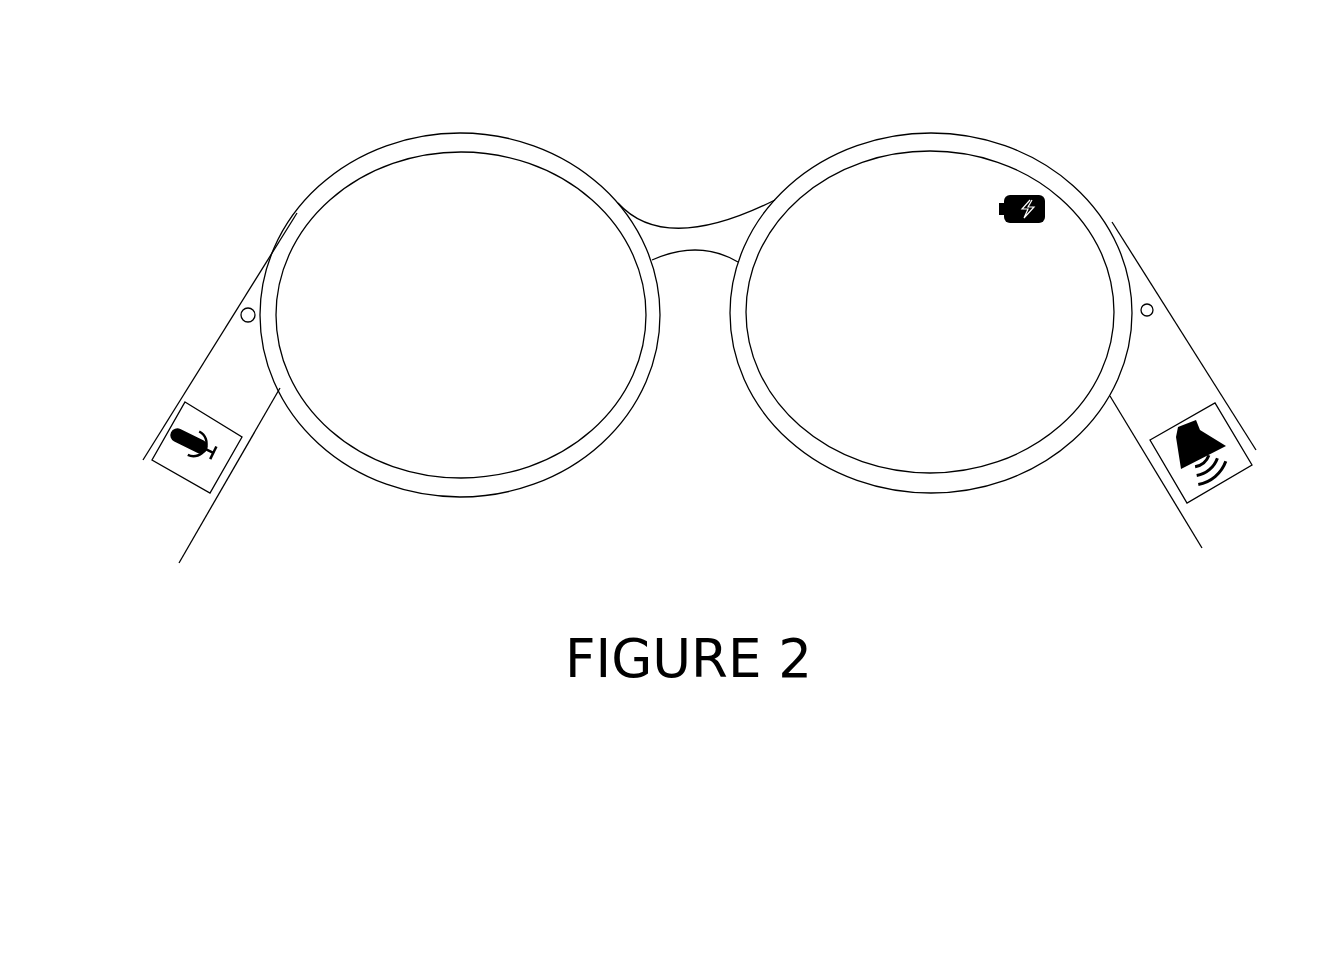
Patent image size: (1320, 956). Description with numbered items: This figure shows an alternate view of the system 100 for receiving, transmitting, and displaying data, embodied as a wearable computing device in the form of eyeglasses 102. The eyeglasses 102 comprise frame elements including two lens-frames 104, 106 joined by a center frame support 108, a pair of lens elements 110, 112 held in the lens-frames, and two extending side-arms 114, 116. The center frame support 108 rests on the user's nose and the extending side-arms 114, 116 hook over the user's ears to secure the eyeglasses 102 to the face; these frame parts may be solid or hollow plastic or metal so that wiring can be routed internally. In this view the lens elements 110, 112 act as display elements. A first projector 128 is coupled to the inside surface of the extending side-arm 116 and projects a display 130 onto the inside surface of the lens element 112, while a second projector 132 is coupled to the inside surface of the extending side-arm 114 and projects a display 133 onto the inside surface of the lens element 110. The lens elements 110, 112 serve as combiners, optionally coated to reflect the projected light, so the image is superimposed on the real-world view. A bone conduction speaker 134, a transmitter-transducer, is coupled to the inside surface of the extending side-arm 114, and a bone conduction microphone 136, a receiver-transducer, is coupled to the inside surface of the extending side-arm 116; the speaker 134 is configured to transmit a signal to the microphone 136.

The system 100 is at (1072, 606).
The eyeglasses 102 is at (292, 128).
The lens-frame 104 is at (946, 336).
The lens-frame 106 is at (460, 343).
The center frame support 108 is at (680, 225).
The lens element 110 is at (933, 447).
The lens element 112 is at (477, 457).
The extending side-arm 114 is at (1183, 335).
The extending side-arm 116 is at (215, 343).
The first projector 128 is at (248, 307).
The display 130 is at (432, 202).
The second projector 132 is at (1146, 303).
The display 133 is at (1030, 223).
The bone conduction speaker 134 is at (1237, 423).
The bone conduction microphone 136 is at (232, 463).